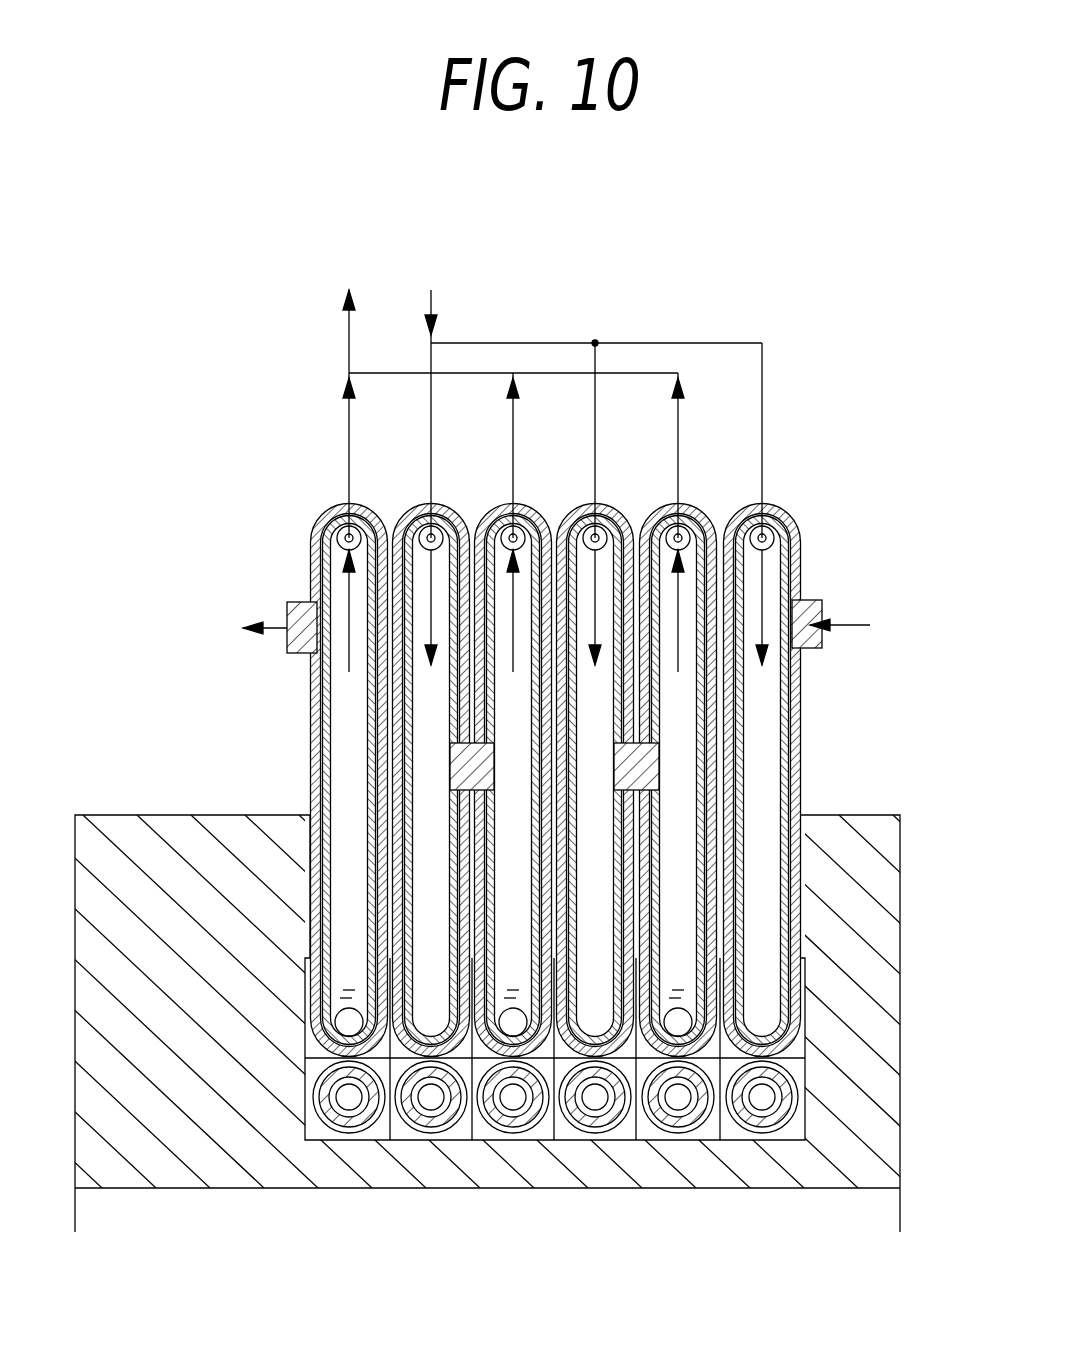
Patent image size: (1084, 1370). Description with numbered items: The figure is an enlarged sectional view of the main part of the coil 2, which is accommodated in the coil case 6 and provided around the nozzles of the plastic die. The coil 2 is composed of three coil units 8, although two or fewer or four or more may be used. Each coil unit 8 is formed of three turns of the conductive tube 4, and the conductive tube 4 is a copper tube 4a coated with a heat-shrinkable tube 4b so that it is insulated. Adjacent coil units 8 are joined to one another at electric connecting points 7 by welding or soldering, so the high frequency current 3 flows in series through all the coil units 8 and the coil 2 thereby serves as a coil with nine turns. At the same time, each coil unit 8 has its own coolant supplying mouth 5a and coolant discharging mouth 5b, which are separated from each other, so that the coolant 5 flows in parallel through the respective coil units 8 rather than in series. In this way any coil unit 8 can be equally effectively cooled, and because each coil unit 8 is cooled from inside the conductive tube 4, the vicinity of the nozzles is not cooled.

The coil 2 is at (566, 772).
The high frequency current 3 is at (282, 623).
The conductive tube 4 is at (838, 780).
The copper tube 4a is at (785, 693).
The heat-shrinkable tube 4b is at (790, 741).
The coolant 5 is at (577, 444).
The coolant supplying mouth 5a is at (431, 447).
The coolant discharging mouth 5b is at (349, 432).
The coil case 6 is at (288, 1180).
The electric connecting points 7 is at (630, 746).
The coil unit 8 is at (631, 772).